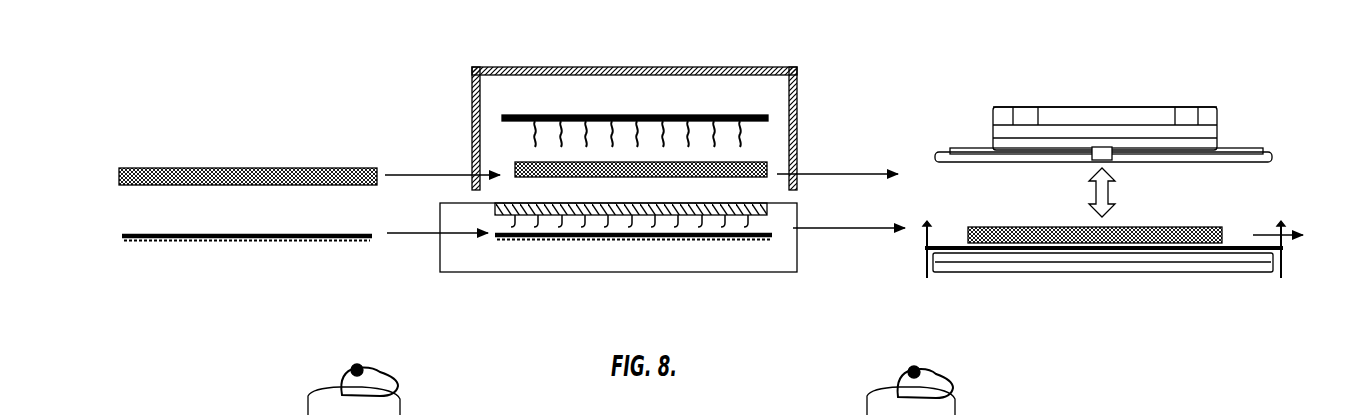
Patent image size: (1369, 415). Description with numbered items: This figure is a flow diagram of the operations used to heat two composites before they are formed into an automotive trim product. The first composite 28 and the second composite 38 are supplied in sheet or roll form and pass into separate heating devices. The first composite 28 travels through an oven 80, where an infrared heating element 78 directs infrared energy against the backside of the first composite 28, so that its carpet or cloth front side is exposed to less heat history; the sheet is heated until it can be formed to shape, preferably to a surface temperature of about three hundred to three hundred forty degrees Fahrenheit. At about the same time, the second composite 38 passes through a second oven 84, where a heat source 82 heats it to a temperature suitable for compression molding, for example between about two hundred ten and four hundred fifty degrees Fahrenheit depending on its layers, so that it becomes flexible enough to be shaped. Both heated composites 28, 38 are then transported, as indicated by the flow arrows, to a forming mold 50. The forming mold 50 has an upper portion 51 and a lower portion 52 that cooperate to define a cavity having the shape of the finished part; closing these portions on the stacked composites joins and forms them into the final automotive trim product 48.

The first composite 28 is at (128, 224).
The second composite 38 is at (228, 160).
The automotive trim product 48 is at (1293, 238).
The forming mold 50 is at (1240, 105).
The upper portion 51 is at (987, 103).
The lower portion 52 is at (980, 273).
The infrared heating element 78 is at (797, 204).
The oven 80 is at (434, 271).
The heat source 82 is at (495, 117).
The second oven 84 is at (708, 63).